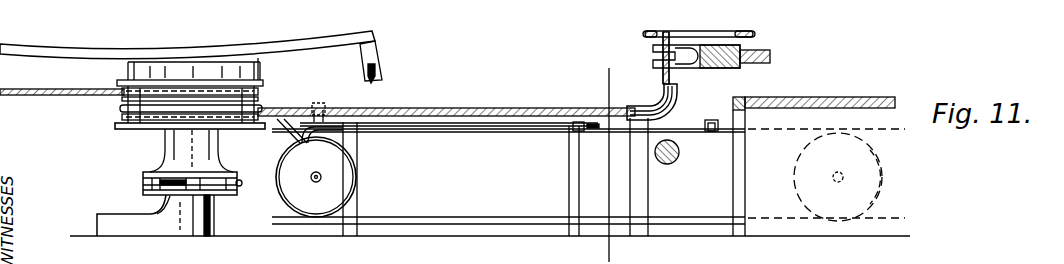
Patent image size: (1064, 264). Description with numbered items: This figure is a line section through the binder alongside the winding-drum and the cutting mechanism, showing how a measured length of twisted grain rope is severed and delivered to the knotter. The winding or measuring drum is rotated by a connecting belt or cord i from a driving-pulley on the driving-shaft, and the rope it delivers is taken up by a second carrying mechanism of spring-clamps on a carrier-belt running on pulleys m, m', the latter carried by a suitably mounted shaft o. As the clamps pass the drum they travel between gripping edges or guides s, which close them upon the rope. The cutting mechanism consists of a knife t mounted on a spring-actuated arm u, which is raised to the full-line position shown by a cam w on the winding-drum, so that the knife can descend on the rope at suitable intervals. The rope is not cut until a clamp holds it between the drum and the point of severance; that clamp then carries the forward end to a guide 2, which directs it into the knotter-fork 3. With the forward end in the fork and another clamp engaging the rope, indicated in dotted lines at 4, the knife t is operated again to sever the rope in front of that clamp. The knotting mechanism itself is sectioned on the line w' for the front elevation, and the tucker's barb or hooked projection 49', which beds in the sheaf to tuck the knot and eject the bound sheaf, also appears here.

The arm u is at (338, 42).
The knife t is at (384, 80).
The cam w is at (276, 68).
The connecting belt or cord i is at (242, 185).
The gripping edges or guides s is at (511, 128).
The clamp 4 is at (318, 103).
The section line w' is at (597, 165).
The pulley m' is at (316, 177).
The shaft o is at (315, 164).
The pulley m is at (838, 177).
The guide 2 is at (678, 96).
The knotter-fork 3 is at (728, 69).
The barb or hooked projection 49' is at (381, 254).